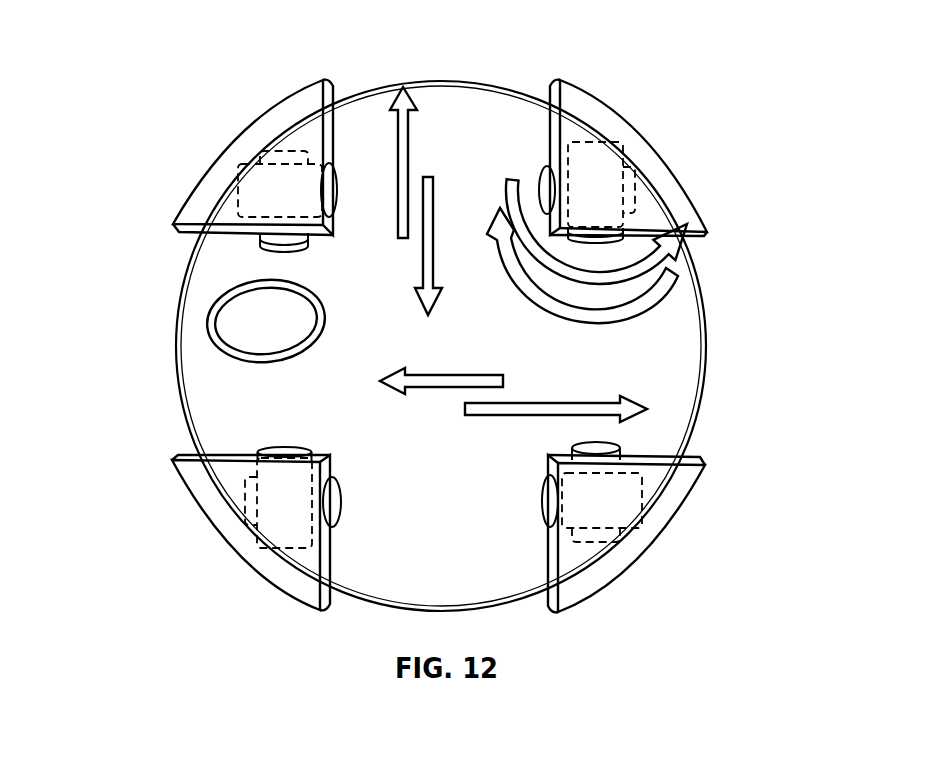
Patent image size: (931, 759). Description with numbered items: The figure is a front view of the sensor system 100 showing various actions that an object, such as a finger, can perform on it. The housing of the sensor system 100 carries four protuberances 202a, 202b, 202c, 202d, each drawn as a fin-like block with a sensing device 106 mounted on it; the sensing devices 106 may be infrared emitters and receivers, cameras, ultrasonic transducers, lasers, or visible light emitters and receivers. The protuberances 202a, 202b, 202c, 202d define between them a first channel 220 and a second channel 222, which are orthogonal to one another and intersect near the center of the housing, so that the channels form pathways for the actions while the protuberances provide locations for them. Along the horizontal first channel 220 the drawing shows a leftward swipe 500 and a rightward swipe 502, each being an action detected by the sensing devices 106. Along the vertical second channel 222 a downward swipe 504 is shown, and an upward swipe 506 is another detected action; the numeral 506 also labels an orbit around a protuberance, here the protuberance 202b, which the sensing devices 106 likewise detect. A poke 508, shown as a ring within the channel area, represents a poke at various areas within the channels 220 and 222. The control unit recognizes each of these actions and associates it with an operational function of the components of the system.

The sensor system 100 is at (170, 90).
The first channel 220 is at (160, 376).
The second channel 222 is at (495, 70).
The protuberance 202a is at (268, 108).
The protuberance 202b is at (588, 92).
The protuberance 202c is at (677, 512).
The protuberance 202d is at (277, 587).
The sensing device 106 is at (335, 193).
The poke 508 is at (225, 327).
The upward swipe / orbit 506 is at (410, 160).
The downward swipe 504 is at (433, 275).
The leftward swipe 500 is at (457, 375).
The rightward swipe 502 is at (532, 415).